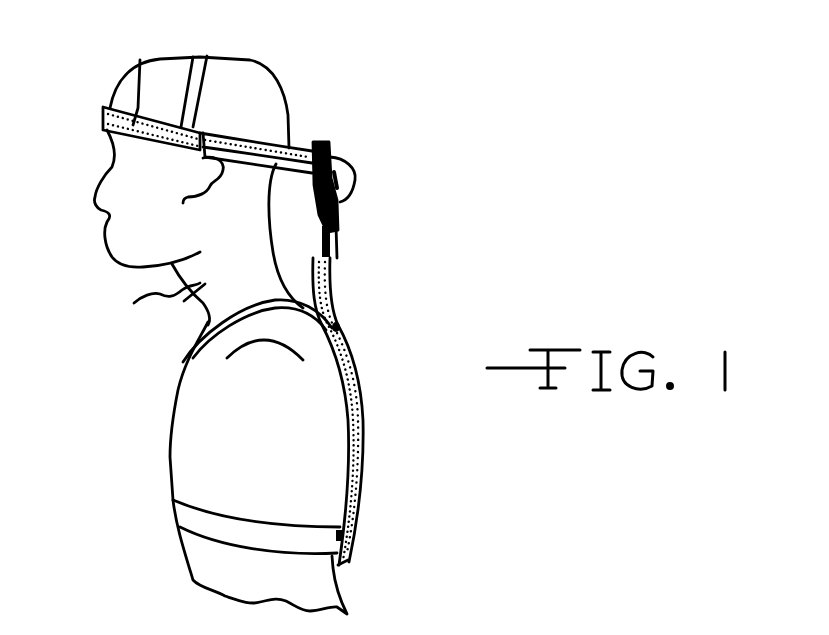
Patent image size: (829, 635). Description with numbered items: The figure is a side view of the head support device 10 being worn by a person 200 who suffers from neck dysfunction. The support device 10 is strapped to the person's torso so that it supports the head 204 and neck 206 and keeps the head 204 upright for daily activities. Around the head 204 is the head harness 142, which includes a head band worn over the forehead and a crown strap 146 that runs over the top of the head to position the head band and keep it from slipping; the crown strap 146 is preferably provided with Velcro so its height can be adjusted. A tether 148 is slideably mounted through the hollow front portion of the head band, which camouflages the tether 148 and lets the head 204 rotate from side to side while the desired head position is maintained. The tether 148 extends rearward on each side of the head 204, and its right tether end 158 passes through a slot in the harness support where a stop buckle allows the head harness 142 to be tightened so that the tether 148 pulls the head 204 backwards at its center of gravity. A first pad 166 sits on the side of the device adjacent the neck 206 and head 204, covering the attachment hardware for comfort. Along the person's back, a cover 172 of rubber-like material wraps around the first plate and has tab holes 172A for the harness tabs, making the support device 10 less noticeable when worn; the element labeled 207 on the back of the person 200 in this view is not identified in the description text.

The support device 10 is at (386, 353).
The head harness 142 is at (140, 60).
The crown strap 146 is at (200, 55).
The tether 148 is at (299, 153).
The right tether end 158 is at (346, 161).
The first pad 166 is at (343, 198).
The cover 172 is at (363, 457).
The tab holes 172A is at (341, 326).
The person 200 is at (86, 207).
The head 204 is at (270, 70).
The neck 206 is at (142, 314).
The pack body 207 is at (193, 443).